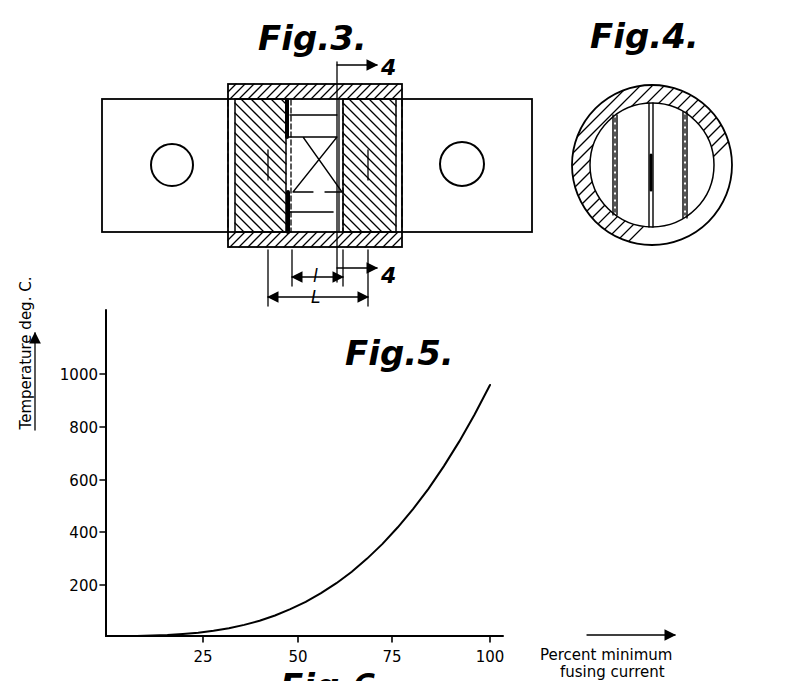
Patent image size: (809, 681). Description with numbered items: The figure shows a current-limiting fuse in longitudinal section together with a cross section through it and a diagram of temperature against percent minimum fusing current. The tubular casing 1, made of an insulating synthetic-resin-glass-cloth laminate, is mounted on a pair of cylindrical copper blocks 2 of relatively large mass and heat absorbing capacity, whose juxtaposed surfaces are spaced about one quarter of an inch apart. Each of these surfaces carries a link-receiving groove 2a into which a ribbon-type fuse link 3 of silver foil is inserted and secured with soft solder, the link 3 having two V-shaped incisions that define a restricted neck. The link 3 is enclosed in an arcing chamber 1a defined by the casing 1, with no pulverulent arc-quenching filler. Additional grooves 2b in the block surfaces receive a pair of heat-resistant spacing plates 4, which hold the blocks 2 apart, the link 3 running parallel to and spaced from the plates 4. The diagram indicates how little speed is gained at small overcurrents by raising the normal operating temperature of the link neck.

In FIG. 3, the tubular casing 1 is at (397, 104).
In FIG. 4, the tubular casing 1 is at (707, 118).
In FIG. 3, the arcing chamber 1a is at (311, 113).
In FIG. 3, the cylindrical copper blocks 2 is at (396, 112).
In FIG. 3, the link-receiving groove 2a is at (286, 86).
In FIG. 4, the link-receiving groove 2a is at (669, 86).
In FIG. 4, the additional grooves 2b is at (607, 224).
In FIG. 3, the ribbon-type fuse link 3 is at (315, 154).
In FIG. 4, the ribbon-type fuse link 3 is at (654, 170).
In FIG. 3, the spacing plates 4 is at (327, 202).
In FIG. 4, the spacing plates 4 is at (618, 152).